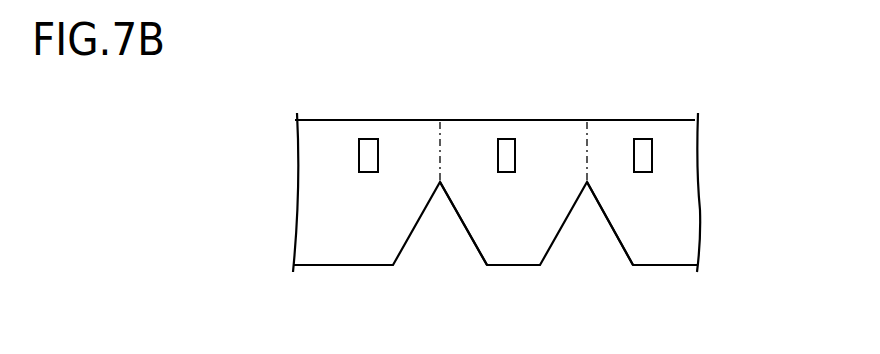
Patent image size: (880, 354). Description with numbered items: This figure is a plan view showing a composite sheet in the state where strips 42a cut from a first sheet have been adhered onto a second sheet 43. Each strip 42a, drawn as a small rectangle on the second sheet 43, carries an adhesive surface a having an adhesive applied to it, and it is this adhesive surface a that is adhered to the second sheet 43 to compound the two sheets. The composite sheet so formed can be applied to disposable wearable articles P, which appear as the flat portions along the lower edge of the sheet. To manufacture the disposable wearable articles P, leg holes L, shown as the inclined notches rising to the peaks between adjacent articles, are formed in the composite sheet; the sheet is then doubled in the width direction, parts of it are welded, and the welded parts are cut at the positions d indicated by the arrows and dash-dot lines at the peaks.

The second sheet 43 is at (690, 240).
The strip 42a is at (368, 140).
The cutting position d is at (440, 120).
The adhesive surface a is at (368, 172).
The leg hole L is at (465, 228).
The disposable wearable article P is at (343, 246).